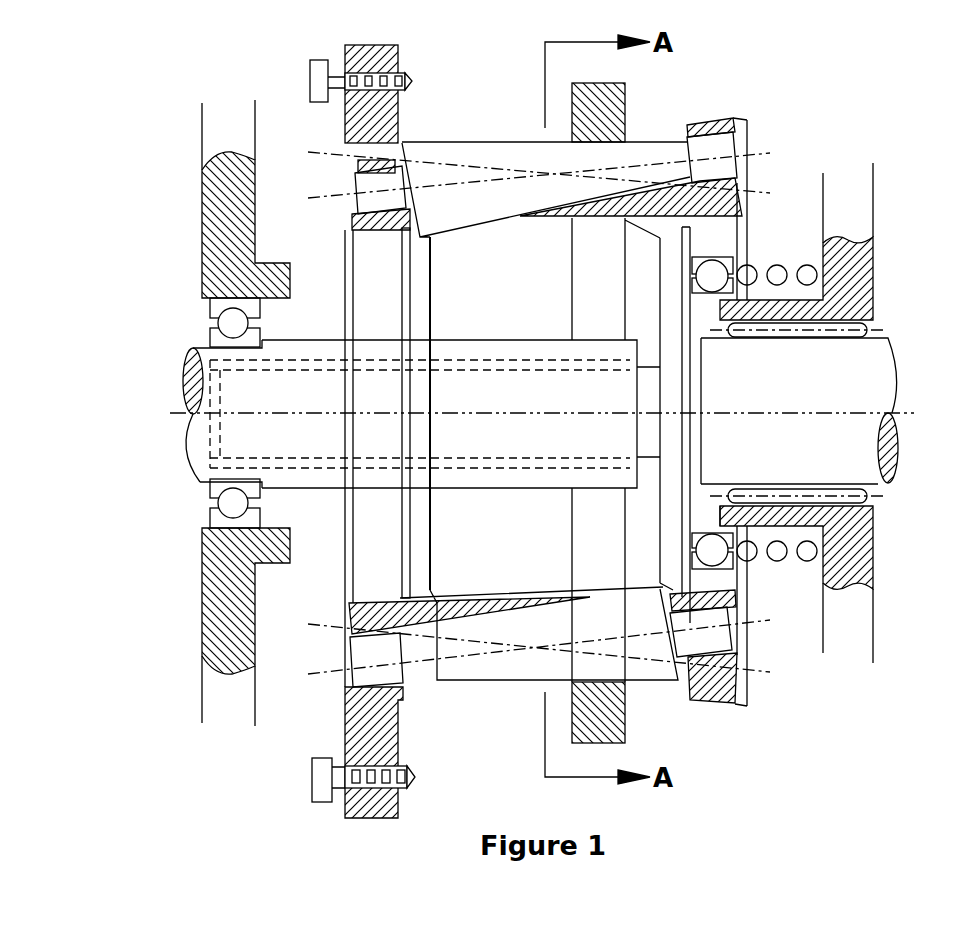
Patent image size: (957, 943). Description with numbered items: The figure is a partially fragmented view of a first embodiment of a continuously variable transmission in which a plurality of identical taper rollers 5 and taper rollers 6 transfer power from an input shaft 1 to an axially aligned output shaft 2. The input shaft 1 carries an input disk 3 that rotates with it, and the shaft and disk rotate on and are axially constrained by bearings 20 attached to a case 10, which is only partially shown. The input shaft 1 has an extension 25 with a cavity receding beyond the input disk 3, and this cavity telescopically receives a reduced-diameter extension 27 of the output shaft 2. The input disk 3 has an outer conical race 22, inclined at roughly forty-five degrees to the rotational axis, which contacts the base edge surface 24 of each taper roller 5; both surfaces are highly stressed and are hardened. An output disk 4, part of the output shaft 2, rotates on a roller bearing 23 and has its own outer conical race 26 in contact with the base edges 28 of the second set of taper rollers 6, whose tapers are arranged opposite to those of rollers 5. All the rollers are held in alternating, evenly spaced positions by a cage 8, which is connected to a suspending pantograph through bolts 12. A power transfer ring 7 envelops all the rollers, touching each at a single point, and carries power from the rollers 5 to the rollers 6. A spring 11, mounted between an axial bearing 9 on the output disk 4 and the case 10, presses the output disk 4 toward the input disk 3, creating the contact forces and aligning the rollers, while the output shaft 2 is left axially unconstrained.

The input shaft 1 is at (212, 353).
The output shaft 2 is at (882, 370).
The input disk 3 is at (400, 282).
The output disk 4 is at (672, 565).
The taper rollers 5 is at (608, 160).
The taper rollers 6 is at (700, 183).
The power transfer ring 7 is at (612, 108).
The cage 8 is at (383, 122).
The axial bearing 9 is at (712, 273).
The case 10 is at (222, 210).
The spring 11 is at (780, 272).
The bolts 12 is at (322, 777).
The bearings 20 is at (228, 320).
The outer conical race 22 is at (418, 313).
The roller bearing 23 is at (867, 493).
The base edge surface 24 is at (392, 217).
The extension 25 is at (490, 488).
The outer conical race 26 is at (735, 615).
The extension 27 is at (725, 518).
The base edges 28 is at (740, 185).